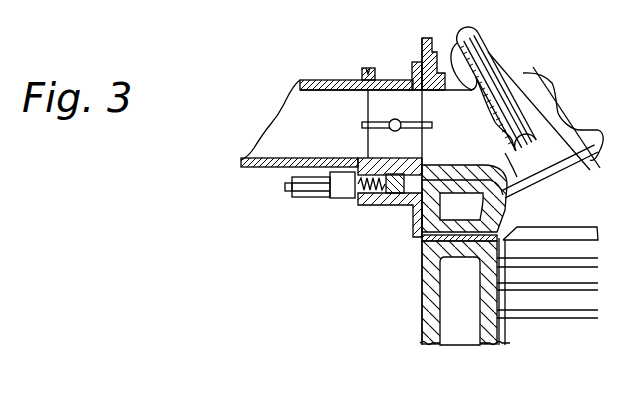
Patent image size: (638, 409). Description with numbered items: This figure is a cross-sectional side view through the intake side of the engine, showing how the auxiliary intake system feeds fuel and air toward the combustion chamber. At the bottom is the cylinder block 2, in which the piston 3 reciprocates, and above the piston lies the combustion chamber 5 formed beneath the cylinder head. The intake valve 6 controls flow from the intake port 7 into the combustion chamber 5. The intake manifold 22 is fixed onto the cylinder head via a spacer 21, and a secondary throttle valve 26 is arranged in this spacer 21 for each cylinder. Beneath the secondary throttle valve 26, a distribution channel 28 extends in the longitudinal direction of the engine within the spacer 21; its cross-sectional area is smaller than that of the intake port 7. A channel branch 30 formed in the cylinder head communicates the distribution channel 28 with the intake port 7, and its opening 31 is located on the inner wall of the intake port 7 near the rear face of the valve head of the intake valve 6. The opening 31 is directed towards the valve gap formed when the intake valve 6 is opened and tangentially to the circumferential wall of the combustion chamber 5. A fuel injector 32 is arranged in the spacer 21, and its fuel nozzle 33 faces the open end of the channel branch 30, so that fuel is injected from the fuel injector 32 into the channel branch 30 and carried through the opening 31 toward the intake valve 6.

The cylinder block 2 is at (425, 328).
The piston 3 is at (543, 327).
The combustion chamber 5 is at (567, 217).
The intake valve 6 is at (490, 50).
The intake port 7 is at (470, 137).
The spacer 21 is at (393, 80).
The intake manifold 22 is at (320, 80).
The secondary throttle valve 26 is at (447, 77).
The distribution channel 28 is at (402, 186).
The channel branch 30 is at (422, 248).
The opening 31 is at (557, 113).
The fuel injector 32 is at (308, 187).
The fuel nozzle 33 is at (367, 205).